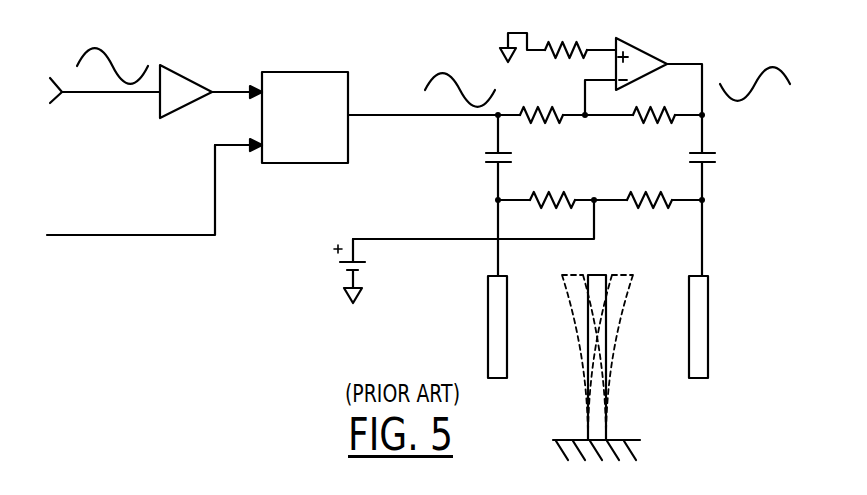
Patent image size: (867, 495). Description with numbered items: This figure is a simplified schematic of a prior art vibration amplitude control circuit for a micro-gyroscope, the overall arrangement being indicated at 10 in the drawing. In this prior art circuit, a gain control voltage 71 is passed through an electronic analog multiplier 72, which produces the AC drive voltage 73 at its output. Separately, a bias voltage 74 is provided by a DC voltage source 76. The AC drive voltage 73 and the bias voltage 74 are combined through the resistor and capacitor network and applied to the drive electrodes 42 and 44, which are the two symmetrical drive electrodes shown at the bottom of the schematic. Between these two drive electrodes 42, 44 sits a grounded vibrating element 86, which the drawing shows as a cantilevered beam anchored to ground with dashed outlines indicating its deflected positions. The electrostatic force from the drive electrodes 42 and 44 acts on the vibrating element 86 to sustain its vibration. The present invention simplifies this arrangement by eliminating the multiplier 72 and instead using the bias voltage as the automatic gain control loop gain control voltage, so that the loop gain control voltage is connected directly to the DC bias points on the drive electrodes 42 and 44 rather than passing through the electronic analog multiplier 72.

The vibration sensing system (prior art) 10 is at (392, 32).
The gain control voltage 71 is at (93, 234).
The electronic analog multiplier 72 is at (283, 71).
The AC drive voltage 73 is at (390, 111).
The bias voltage 74 is at (413, 238).
The DC voltage source 76 is at (340, 266).
The drive electrode 42 is at (487, 312).
The drive electrode 44 is at (711, 322).
The vibrating element 86 is at (607, 404).